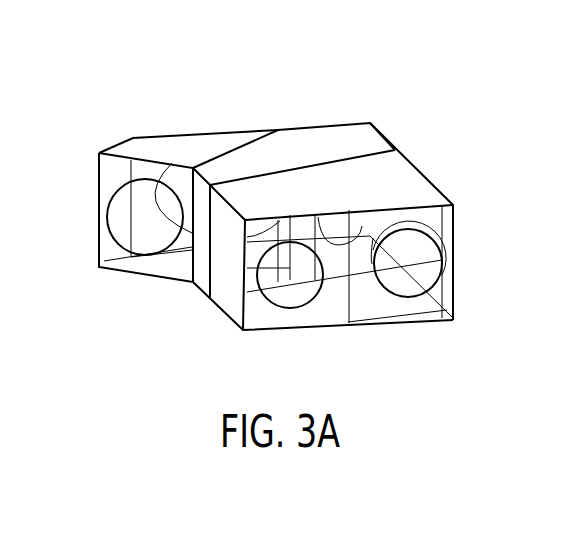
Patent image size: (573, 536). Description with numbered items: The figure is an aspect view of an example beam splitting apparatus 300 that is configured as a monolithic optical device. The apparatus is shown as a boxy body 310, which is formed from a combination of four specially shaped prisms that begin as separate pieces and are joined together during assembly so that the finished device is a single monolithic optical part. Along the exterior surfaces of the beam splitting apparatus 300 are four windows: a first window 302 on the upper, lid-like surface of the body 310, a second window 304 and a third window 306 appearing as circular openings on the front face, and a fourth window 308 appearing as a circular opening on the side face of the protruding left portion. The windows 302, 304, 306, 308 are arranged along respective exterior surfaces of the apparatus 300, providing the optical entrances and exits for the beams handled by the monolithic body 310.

The beam splitting apparatus 300 is at (100, 103).
The first window 302 is at (310, 125).
The second window 304 is at (408, 290).
The third window 306 is at (300, 293).
The fourth window 308 is at (145, 245).
The body 310 is at (424, 158).